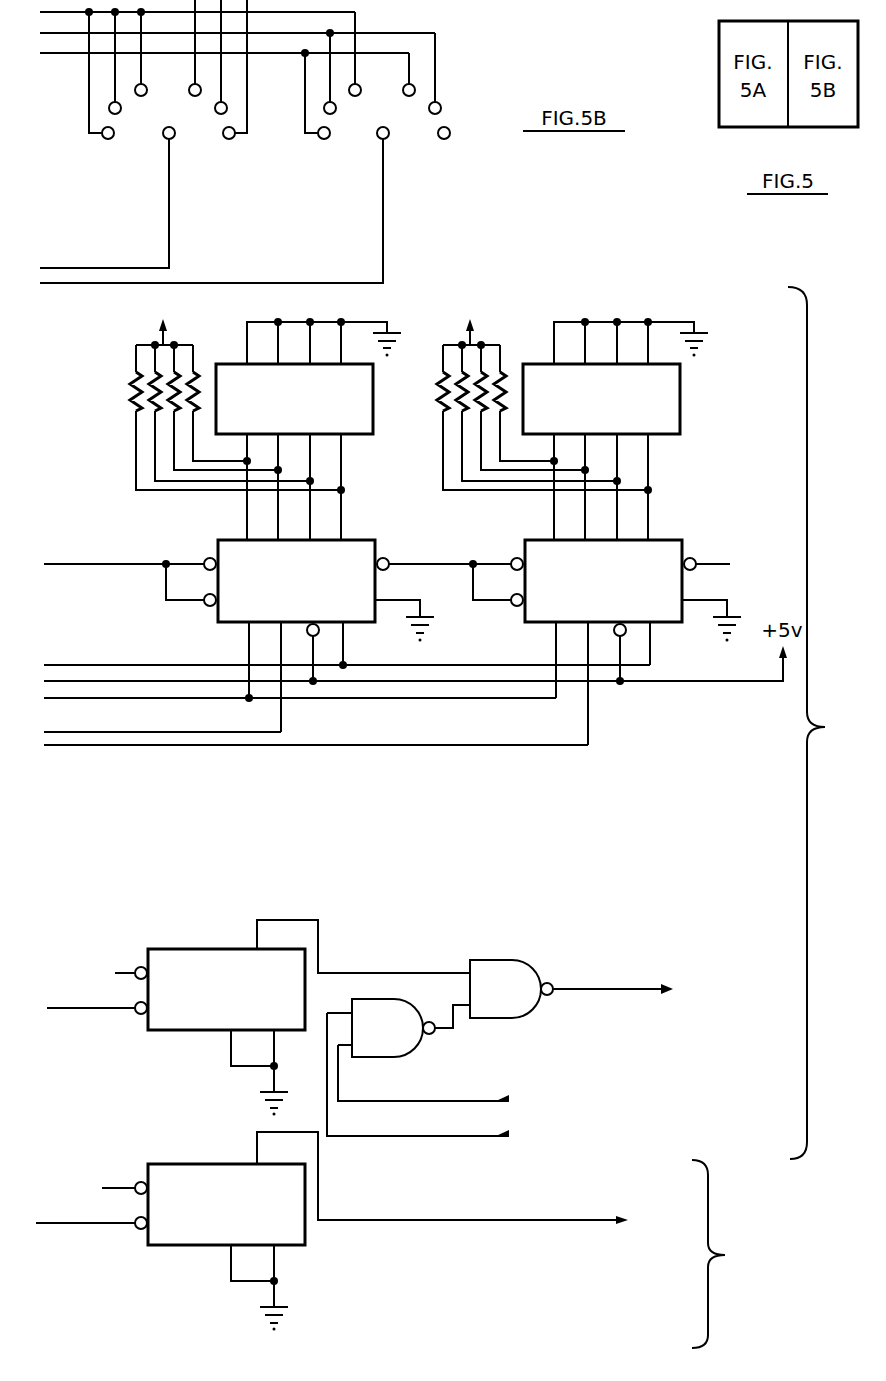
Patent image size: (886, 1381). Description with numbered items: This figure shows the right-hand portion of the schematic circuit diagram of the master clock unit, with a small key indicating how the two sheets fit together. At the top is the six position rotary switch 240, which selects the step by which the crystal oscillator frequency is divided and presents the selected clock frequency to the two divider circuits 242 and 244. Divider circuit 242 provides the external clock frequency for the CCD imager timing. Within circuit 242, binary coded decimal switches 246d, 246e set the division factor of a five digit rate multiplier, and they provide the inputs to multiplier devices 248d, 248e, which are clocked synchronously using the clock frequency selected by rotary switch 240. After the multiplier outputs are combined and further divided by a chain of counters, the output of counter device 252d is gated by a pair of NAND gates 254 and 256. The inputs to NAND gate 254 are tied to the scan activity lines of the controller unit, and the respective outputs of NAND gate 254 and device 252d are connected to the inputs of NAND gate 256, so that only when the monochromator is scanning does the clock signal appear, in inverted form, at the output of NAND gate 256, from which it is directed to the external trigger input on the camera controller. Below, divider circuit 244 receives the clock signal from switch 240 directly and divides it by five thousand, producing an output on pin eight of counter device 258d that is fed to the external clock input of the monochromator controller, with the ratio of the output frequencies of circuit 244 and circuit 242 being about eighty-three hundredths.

The six position rotary switch 240 is at (299, 163).
The divider circuit 242 is at (832, 723).
The divider circuit 244 is at (731, 1254).
The binary coded decimal switch 246d is at (370, 436).
The binary coded decimal switch 246e is at (580, 417).
The multiplier device 248d is at (366, 540).
The multiplier device 248e is at (605, 622).
The counter device 252d is at (190, 1032).
The NAND gate 254 is at (375, 1059).
The NAND gate 256 is at (483, 960).
The counter device 258d is at (332, 1231).